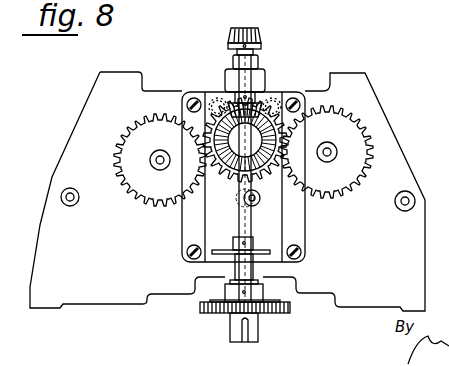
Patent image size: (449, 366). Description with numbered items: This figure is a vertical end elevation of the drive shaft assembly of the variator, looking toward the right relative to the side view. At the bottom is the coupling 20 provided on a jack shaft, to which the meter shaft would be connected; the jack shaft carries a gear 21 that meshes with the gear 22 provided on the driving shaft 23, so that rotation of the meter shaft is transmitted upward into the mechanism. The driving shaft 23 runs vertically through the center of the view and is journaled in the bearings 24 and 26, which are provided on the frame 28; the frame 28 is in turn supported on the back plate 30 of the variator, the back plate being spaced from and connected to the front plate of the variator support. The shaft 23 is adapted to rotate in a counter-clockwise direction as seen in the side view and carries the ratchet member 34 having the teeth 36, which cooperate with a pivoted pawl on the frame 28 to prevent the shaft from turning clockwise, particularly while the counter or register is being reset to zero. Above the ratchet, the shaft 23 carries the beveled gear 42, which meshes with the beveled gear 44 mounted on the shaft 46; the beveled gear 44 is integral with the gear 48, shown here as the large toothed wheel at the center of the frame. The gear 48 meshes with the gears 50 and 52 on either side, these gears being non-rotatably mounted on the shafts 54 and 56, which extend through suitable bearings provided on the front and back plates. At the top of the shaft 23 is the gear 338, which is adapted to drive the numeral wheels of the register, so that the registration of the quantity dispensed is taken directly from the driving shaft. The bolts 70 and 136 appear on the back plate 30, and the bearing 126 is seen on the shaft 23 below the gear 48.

The coupling 20 is at (258, 334).
The gear 21 is at (293, 313).
The gear 22 is at (209, 318).
The driving shaft 23 is at (248, 222).
The bearing 24 is at (255, 271).
The bearing 26 is at (258, 64).
The frame 28 is at (302, 206).
The back plate 30 is at (376, 118).
The ratchet member 34 is at (210, 256).
The teeth 36 is at (258, 246).
The beveled gear 42 is at (258, 104).
The beveled gear 44 is at (268, 135).
The shaft 46 is at (233, 182).
The gear 48 is at (220, 110).
The gear 50 is at (332, 125).
The gear 52 is at (130, 142).
The shaft 54 is at (336, 155).
The shaft 56 is at (156, 166).
The mounting bolt 70 is at (413, 196).
The bearing 126 is at (250, 202).
The mounting bolt 136 is at (62, 198).
The gear 338 is at (261, 36).